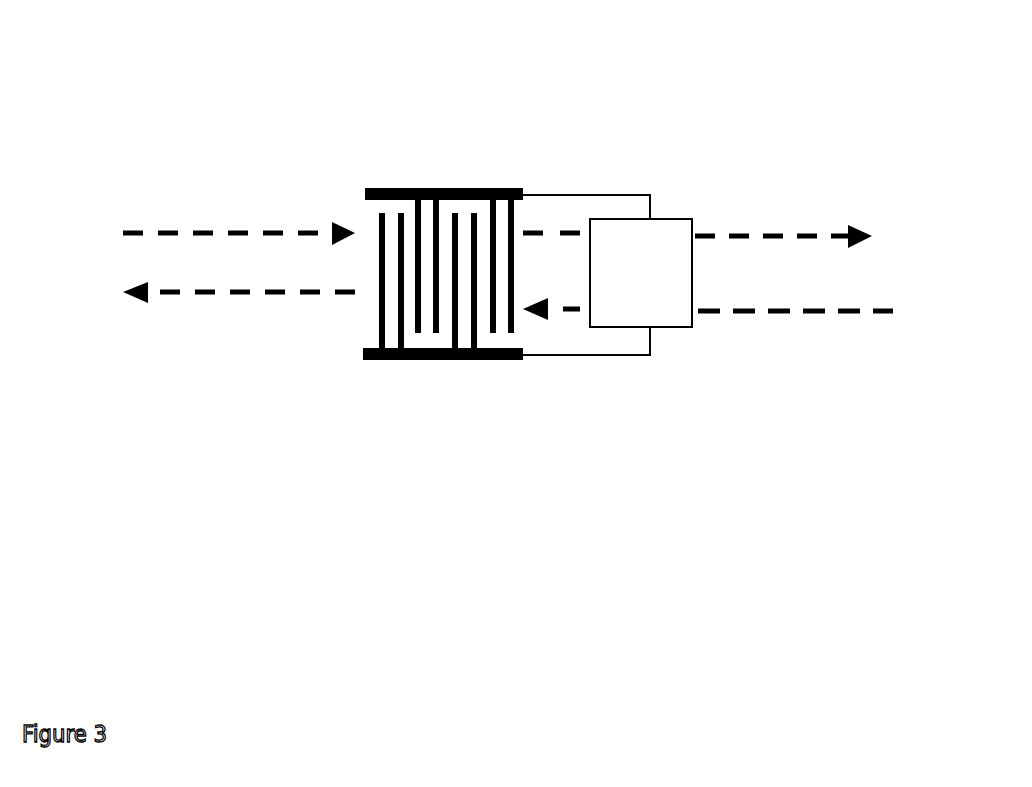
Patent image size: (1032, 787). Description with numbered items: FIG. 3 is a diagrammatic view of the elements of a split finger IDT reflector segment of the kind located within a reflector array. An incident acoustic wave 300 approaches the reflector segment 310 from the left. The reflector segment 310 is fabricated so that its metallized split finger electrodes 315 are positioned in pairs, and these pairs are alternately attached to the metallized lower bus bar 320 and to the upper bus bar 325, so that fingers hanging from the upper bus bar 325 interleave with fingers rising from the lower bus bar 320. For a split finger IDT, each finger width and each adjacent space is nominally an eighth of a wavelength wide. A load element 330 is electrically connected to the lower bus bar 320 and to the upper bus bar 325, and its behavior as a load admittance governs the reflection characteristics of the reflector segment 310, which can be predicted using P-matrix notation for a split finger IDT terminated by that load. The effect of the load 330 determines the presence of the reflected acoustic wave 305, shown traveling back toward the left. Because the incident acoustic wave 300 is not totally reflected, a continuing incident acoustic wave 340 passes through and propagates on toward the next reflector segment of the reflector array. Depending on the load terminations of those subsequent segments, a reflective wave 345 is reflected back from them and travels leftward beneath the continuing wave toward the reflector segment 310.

The incident acoustic wave 300 is at (273, 213).
The reflected acoustic wave 305 is at (262, 310).
The reflector segment 310 is at (417, 311).
The split finger electrodes 315 is at (475, 378).
The lower bus bar 320 is at (512, 380).
The upper bus bar 325 is at (505, 175).
The load element 330 is at (607, 275).
The continuing incident acoustic wave 340 is at (792, 217).
The reflective wave 345 is at (812, 330).